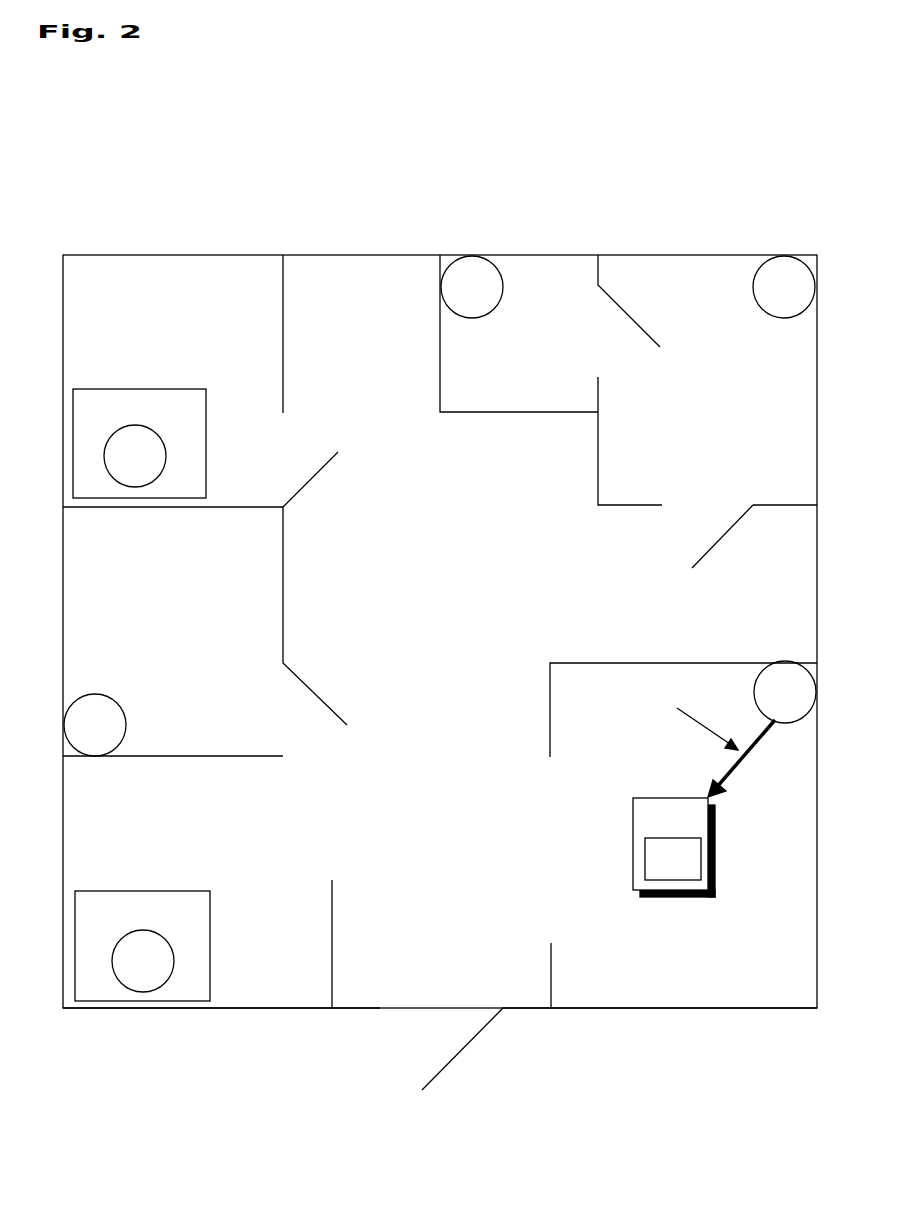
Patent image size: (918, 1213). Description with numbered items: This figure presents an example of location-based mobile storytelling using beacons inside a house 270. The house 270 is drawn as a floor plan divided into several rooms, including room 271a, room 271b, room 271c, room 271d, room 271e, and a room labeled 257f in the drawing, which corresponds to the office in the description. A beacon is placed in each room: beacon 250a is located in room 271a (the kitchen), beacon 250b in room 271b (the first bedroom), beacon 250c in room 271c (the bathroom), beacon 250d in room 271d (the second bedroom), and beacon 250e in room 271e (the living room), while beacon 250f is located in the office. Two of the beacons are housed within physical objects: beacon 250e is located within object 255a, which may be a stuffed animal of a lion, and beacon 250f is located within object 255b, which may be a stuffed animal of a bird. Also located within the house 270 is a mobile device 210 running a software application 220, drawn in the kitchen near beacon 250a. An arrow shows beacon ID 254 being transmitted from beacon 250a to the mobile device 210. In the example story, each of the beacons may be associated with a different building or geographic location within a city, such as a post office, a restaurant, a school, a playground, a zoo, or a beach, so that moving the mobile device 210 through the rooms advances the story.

The house 270 is at (584, 218).
The room 257f is at (225, 349).
The room 271a is at (730, 979).
The room 271b is at (758, 437).
The room 271c is at (575, 352).
The room 271d is at (225, 632).
The room 271e is at (223, 856).
The object 255a is at (198, 919).
The object 255b is at (195, 419).
The beacon 250a is at (810, 704).
The beacon 250b is at (808, 297).
The beacon 250c is at (495, 297).
The beacon 250d is at (120, 736).
The beacon 250e is at (167, 972).
The beacon 250f is at (157, 466).
The beacon ID 254 is at (668, 712).
The mobile device 210 is at (688, 829).
The software application 220 is at (688, 871).